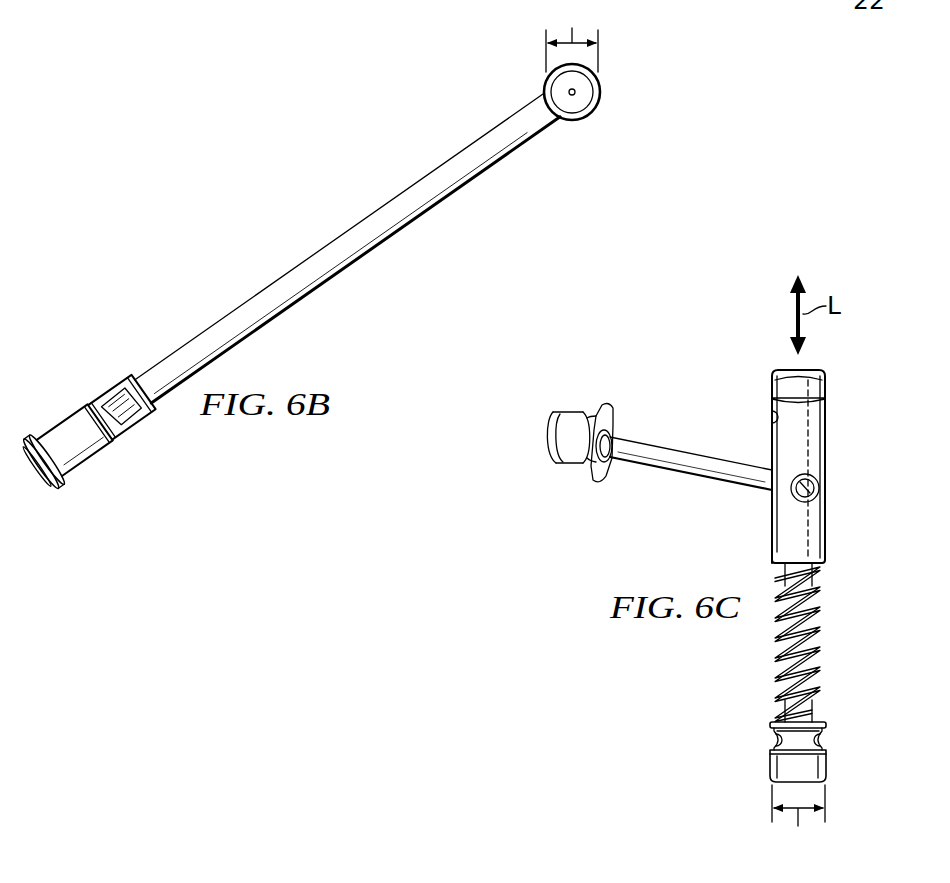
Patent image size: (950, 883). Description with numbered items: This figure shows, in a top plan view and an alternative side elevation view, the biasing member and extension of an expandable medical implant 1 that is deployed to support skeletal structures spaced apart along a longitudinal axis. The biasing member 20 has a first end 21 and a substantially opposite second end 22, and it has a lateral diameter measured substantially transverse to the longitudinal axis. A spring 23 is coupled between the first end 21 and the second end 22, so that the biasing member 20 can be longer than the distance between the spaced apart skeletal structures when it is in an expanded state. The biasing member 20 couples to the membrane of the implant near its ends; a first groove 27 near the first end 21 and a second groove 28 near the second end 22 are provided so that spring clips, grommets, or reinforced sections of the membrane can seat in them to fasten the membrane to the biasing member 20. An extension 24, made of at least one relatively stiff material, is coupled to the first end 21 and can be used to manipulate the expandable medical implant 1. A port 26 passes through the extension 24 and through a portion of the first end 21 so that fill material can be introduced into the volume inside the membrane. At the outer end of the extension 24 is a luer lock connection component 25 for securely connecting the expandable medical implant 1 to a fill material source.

In FIG. 6B, the expandable medical implant 1 is at (211, 105).
In FIG. 6C, the expandable medical implant 1 is at (671, 341).
In FIG. 6B, the biasing member 20 is at (607, 88).
In FIG. 6C, the biasing member 20 is at (837, 529).
In FIG. 6B, the first end 21 is at (582, 109).
In FIG. 6C, the first end 21 is at (826, 441).
In FIG. 6C, the second end 22 is at (826, 760).
In FIG. 6C, the spring 23 is at (818, 633).
In FIG. 6B, the extension 24 is at (232, 311).
In FIG. 6C, the extension 24 is at (687, 482).
In FIG. 6B, the luer lock connection component 25 is at (64, 428).
In FIG. 6C, the luer lock connection component 25 is at (557, 463).
In FIG. 6C, the port 26 is at (818, 494).
In FIG. 6C, the first groove 27 is at (772, 399).
In FIG. 6C, the second groove 28 is at (770, 751).